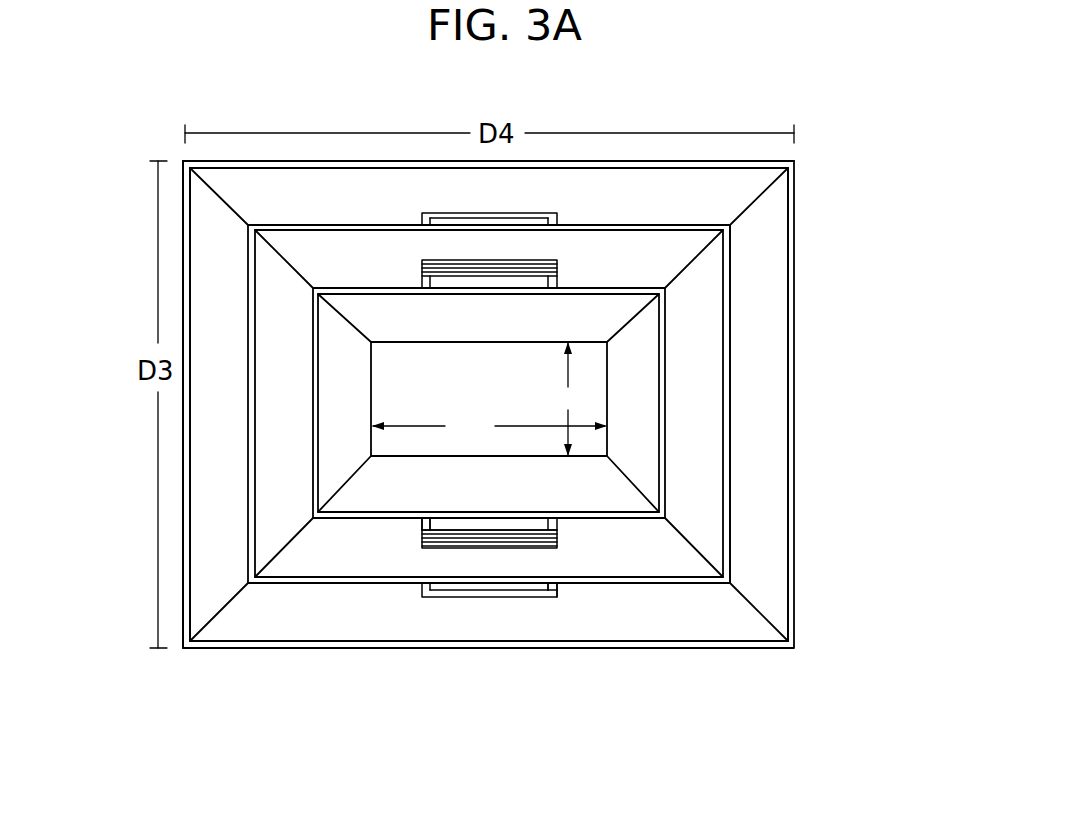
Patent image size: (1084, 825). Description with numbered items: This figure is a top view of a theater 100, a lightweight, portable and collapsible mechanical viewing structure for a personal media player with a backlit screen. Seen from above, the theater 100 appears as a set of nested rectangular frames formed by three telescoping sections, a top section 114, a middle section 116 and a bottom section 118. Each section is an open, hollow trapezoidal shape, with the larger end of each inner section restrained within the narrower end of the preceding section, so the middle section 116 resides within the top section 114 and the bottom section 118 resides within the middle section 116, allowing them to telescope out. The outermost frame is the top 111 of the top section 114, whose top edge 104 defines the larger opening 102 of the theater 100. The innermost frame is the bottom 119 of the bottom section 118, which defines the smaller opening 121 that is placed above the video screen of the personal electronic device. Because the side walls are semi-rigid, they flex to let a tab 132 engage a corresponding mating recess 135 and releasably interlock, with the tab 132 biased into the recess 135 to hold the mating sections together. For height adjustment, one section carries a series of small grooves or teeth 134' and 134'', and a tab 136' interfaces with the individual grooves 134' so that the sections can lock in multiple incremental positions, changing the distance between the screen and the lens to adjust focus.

The theater 100 is at (838, 113).
The larger opening 102 is at (288, 165).
The top edge 104 is at (183, 260).
The top 111 is at (273, 600).
The top section 114 is at (762, 265).
The middle section 116 is at (695, 305).
The bottom section 118 is at (637, 343).
The bottom 119 is at (373, 381).
The smaller opening 121 is at (532, 383).
The tab 132 is at (522, 588).
The grooves 134' is at (664, 534).
The grooves 134'' is at (685, 203).
The mating recess 135 is at (555, 593).
The tab 136' is at (664, 505).